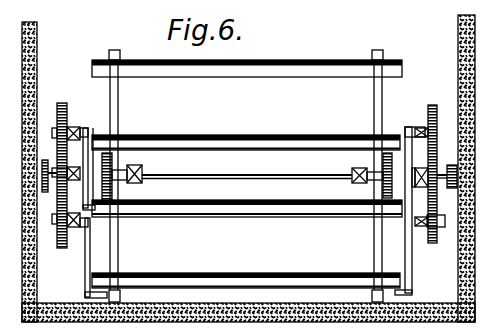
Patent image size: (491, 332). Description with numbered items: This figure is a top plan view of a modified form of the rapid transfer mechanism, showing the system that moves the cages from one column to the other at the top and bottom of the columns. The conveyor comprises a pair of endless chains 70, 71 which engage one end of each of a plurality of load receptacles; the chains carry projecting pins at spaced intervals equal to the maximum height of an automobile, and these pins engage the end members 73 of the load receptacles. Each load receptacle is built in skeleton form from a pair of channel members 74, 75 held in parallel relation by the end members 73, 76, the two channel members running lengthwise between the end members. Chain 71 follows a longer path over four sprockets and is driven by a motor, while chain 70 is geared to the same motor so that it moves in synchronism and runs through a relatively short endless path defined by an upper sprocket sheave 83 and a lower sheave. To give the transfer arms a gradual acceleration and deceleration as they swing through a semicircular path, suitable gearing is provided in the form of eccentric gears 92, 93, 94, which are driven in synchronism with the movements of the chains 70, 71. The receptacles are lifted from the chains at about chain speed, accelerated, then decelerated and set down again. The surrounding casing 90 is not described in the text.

The endless chain 70 is at (104, 142).
The endless chain 71 is at (108, 58).
The end member 73 is at (114, 108).
The channel member 74 is at (247, 135).
The channel member 75 is at (327, 77).
The end member 76 is at (374, 108).
The upper sprocket sheave 83 is at (123, 160).
The casing 90 is at (420, 330).
The eccentric gear 92 is at (432, 246).
The eccentric gear 93 is at (438, 152).
The eccentric gear 94 is at (432, 105).